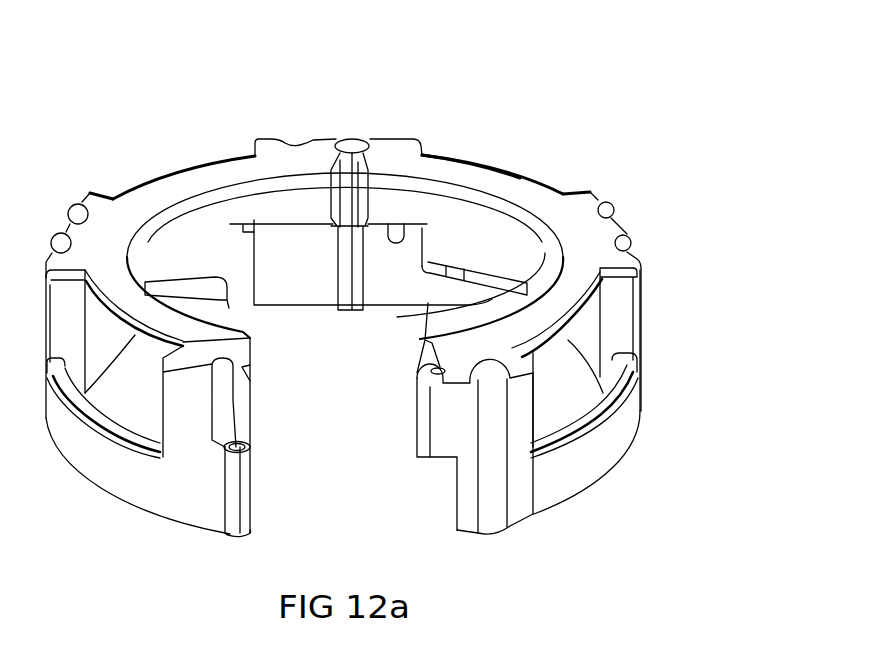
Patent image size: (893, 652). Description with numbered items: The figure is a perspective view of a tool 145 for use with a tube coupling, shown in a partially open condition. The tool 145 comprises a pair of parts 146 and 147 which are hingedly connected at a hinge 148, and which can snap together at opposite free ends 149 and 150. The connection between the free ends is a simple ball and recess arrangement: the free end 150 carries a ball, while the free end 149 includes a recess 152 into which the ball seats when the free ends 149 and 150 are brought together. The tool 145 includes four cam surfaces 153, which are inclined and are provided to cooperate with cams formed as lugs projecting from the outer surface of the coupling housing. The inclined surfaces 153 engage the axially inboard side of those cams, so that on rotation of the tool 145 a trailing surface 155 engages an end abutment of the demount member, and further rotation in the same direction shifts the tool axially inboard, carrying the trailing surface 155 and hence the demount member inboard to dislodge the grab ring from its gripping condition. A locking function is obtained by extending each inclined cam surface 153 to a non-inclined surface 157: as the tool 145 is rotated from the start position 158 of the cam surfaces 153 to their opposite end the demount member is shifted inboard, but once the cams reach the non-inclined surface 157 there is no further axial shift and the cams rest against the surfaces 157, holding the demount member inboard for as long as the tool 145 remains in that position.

The tool 145 is at (343, 344).
The part 146 is at (221, 153).
The part 147 is at (486, 163).
The hinge 148 is at (351, 140).
The free end 149 is at (249, 500).
The free end 150 is at (423, 437).
The recess 152 is at (235, 442).
The cam surface 153 is at (176, 268).
The trailing surface 155 is at (398, 222).
The non-inclined surface 157 is at (434, 268).
The start position 158 is at (229, 300).